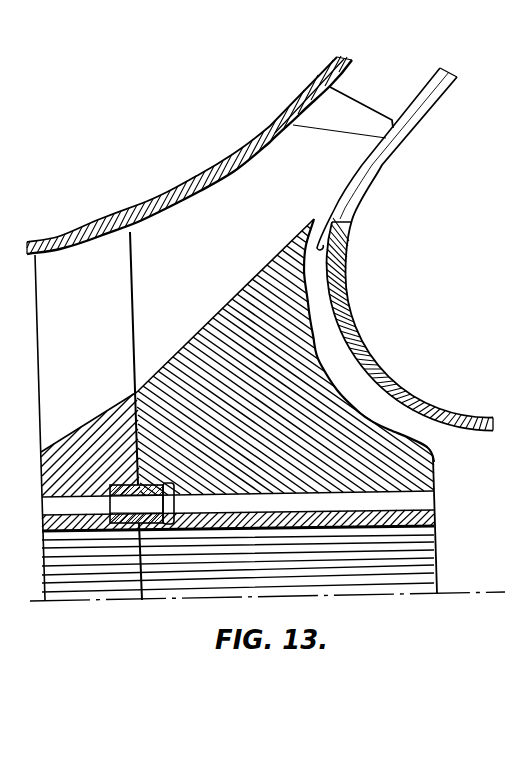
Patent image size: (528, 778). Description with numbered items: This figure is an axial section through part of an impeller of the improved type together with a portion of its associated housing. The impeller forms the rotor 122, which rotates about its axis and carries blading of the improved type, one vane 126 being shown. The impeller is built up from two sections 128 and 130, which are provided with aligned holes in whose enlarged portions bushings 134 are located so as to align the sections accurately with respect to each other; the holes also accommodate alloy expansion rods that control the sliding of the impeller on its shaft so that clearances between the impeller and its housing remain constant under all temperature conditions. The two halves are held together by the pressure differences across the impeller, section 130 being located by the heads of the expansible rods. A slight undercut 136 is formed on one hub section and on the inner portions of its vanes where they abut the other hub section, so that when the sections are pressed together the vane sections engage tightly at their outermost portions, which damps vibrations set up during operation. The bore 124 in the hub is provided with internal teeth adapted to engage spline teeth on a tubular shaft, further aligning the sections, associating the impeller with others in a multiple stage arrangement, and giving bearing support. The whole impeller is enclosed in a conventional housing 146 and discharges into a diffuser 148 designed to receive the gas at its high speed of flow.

The rotor 122 is at (302, 374).
The bore 124 is at (423, 554).
The vane 126 is at (217, 244).
The impeller section 128 is at (212, 321).
The impeller section 130 is at (93, 421).
The bushing 134 is at (121, 506).
The undercut 136 is at (135, 320).
The housing 146 is at (210, 177).
The diffuser 148 is at (364, 96).